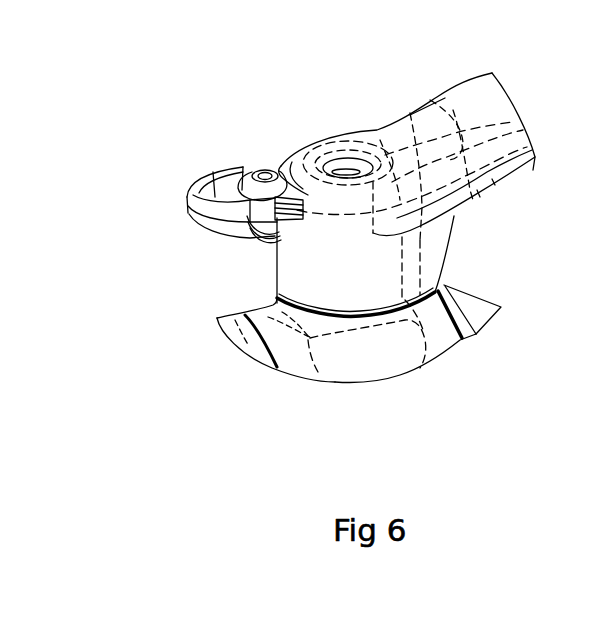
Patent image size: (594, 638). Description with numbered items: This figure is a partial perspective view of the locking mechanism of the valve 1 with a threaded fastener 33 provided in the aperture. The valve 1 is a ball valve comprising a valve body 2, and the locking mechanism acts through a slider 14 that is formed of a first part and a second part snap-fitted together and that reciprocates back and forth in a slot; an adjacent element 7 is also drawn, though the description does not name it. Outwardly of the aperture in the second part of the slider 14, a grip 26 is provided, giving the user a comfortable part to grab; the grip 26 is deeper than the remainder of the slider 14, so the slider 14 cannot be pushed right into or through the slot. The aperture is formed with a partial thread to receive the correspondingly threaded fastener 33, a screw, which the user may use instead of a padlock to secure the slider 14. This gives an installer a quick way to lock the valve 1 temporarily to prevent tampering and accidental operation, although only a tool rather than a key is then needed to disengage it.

The valve 1 is at (240, 417).
The valve body 2 is at (437, 337).
The arm / hood 7 is at (492, 93).
The slider 14 is at (290, 222).
The grip 26 is at (197, 193).
The threaded fastener 33 is at (250, 180).